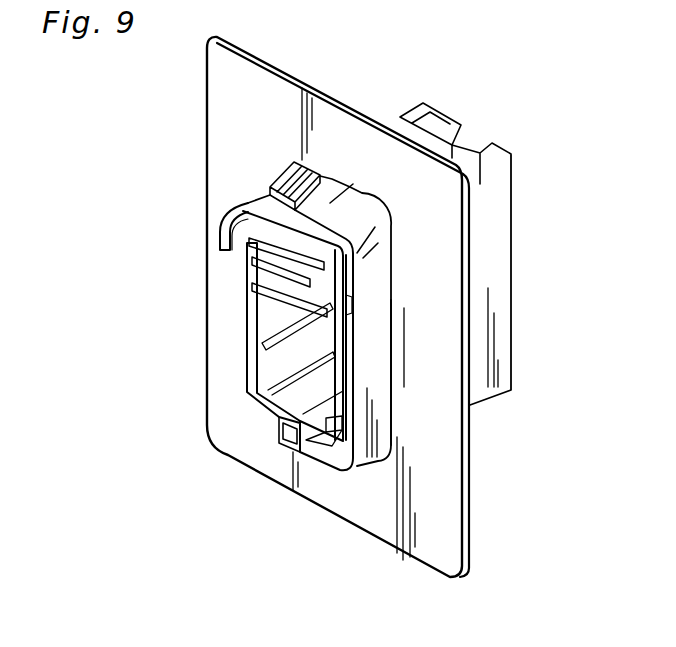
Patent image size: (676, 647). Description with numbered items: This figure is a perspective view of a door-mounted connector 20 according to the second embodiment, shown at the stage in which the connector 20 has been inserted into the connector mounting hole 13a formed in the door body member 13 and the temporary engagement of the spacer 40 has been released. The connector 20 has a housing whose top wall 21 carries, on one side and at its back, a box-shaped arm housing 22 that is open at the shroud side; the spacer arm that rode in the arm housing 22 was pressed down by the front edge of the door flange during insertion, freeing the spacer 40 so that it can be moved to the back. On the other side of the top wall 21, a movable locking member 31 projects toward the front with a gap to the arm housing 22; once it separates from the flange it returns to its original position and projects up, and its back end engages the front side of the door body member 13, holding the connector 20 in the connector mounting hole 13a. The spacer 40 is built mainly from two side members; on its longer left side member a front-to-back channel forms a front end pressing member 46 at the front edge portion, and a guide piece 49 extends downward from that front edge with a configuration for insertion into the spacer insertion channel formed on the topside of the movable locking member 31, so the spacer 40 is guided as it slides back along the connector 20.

The door body member 13 is at (438, 455).
The connector mounting hole 13a is at (393, 430).
The connector 20 is at (516, 298).
The top wall 21 is at (352, 220).
The arm housing 22 is at (457, 143).
The movable locking member 31 is at (287, 177).
The spacer 40 is at (222, 228).
The front end pressing member 46 is at (267, 216).
The guide piece 49 is at (238, 232).